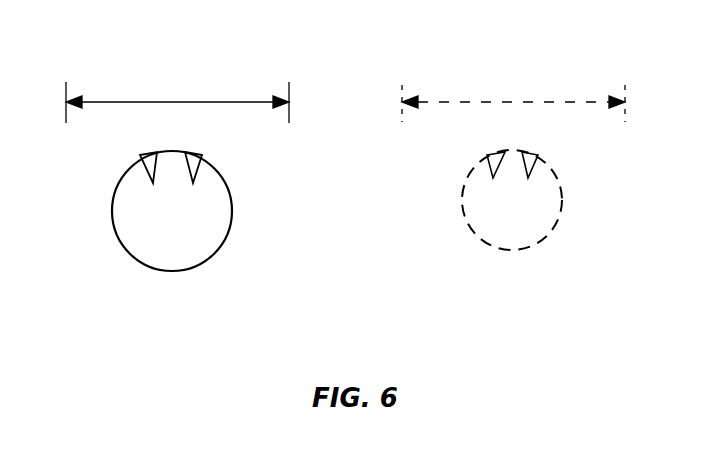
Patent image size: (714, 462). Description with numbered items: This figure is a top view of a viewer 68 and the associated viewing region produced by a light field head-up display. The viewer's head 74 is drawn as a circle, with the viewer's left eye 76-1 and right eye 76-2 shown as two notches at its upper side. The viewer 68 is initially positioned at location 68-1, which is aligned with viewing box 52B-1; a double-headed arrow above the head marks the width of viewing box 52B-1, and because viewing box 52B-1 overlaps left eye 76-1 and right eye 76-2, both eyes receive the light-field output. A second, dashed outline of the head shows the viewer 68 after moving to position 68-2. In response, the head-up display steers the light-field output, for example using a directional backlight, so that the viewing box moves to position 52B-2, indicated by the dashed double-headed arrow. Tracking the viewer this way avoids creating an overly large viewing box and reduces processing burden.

The viewing box 52B-1 is at (165, 102).
The viewing box position 52B-2 is at (514, 102).
The viewer 68 is at (205, 288).
The location 68-1 is at (203, 218).
The position 68-2 is at (521, 251).
The head 74 is at (232, 213).
The left eye 76-1 is at (145, 152).
The right eye 76-2 is at (199, 152).